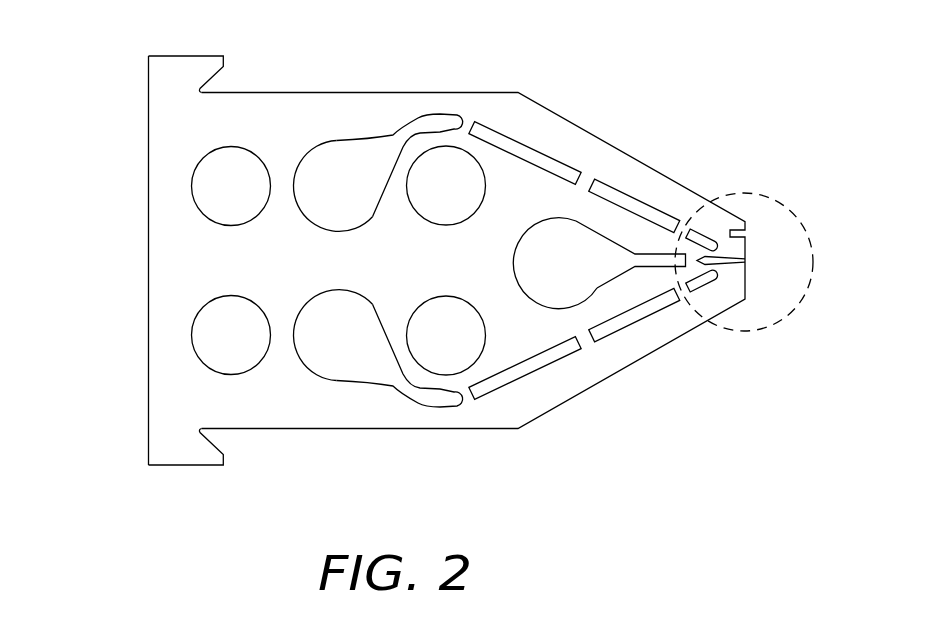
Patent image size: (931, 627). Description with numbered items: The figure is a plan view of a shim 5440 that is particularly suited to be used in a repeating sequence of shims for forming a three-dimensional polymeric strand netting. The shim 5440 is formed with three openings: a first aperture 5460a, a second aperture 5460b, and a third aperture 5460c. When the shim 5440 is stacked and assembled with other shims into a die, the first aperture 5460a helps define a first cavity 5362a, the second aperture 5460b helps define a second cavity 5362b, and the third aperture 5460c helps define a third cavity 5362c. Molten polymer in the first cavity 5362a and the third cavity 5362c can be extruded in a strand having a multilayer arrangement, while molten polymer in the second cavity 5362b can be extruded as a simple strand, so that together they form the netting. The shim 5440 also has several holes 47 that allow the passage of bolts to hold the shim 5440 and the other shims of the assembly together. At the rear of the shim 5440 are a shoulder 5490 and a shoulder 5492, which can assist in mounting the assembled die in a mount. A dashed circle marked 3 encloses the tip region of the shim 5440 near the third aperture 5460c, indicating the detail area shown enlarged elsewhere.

The shim 5440 is at (537, 42).
The shoulder 5490 is at (212, 76).
The shoulder 5492 is at (217, 446).
The holes 47 is at (205, 366).
The first cavity 5362a is at (316, 183).
The second cavity 5362b is at (316, 336).
The third cavity 5362c is at (585, 248).
The first aperture 5460a is at (332, 145).
The second aperture 5460b is at (332, 380).
The third aperture 5460c is at (583, 290).
The detail region of FIG. 3 is at (795, 214).